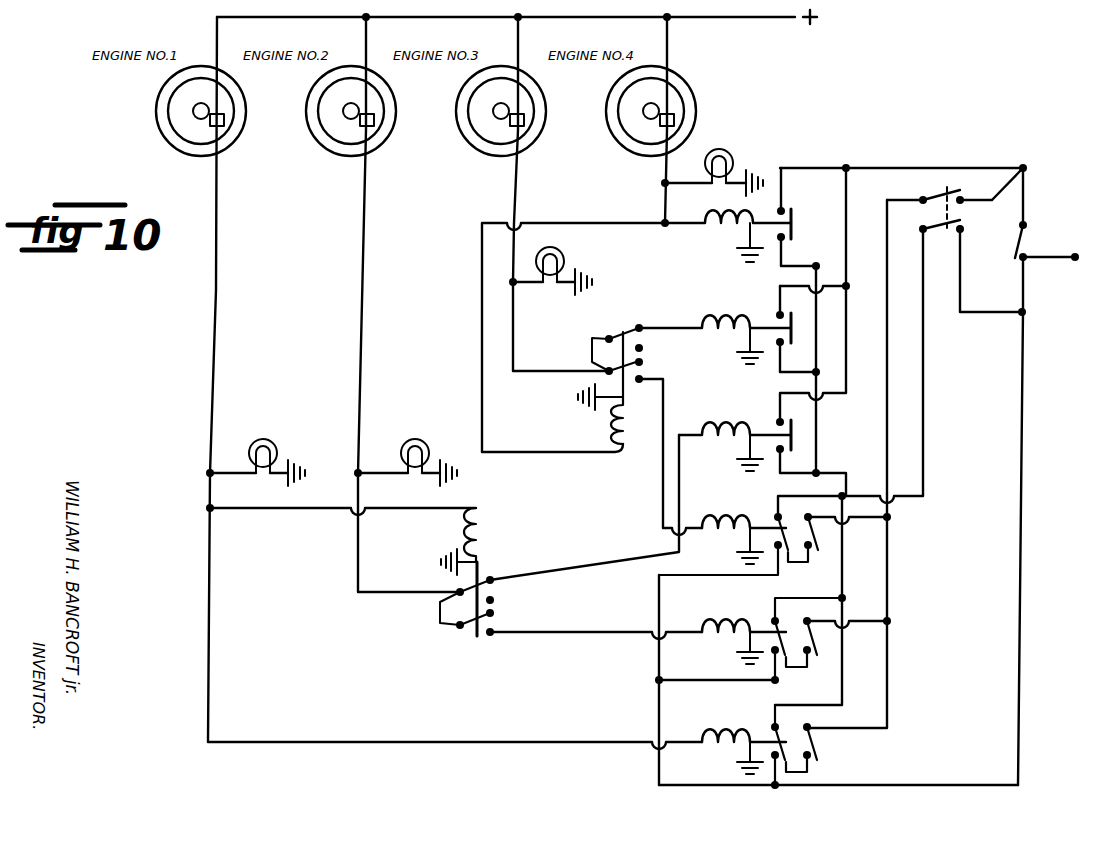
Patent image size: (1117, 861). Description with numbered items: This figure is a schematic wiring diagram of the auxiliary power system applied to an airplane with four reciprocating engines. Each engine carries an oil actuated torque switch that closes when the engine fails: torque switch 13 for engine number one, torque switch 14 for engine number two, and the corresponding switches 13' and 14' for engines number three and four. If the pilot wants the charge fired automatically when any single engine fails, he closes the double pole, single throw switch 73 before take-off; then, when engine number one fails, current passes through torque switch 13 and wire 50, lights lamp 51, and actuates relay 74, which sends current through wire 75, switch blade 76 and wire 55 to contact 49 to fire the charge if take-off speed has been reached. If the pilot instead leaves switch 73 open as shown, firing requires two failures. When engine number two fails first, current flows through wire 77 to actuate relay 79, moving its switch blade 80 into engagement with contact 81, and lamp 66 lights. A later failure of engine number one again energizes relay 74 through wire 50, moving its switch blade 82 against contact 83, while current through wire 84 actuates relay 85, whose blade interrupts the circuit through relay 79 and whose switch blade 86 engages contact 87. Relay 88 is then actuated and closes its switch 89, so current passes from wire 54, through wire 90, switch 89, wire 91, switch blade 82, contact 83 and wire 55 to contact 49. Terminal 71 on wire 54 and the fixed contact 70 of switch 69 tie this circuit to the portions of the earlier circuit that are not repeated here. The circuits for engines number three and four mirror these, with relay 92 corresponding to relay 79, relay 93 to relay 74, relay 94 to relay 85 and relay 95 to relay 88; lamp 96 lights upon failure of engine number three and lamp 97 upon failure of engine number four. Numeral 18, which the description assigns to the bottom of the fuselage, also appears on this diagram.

The torque switch 13 is at (203, 118).
The torque switch 14 is at (353, 118).
The engine no. 3 indicator 13' is at (504, 115).
The engine no. 4 indicator 14' is at (653, 115).
The bottom of the airplane fuselage 18 is at (486, 636).
The relay contact 49 is at (1075, 254).
The wire 50 is at (210, 395).
The lamp 51 is at (270, 440).
The wire 54 is at (932, 170).
The wire 55 is at (900, 785).
The lamp 66 is at (422, 440).
The switch 69 is at (1017, 246).
The fixed contact 70 is at (1025, 262).
The terminal 71 is at (1024, 168).
The double pole, single throw switch 73 is at (923, 222).
The relay 74 is at (726, 736).
The wire 75 is at (888, 580).
The switch blade 76 is at (812, 740).
The wire 77 is at (360, 375).
The relay 79 is at (722, 626).
The switch blade 80 is at (778, 622).
The contact 81 is at (775, 656).
The switch blade 82 is at (788, 736).
The contact 83 is at (766, 745).
The wire 84 is at (314, 512).
The relay 85 is at (484, 530).
The switch blade 86 is at (467, 599).
The contact 87 is at (492, 578).
The relay 88 is at (722, 425).
The switch 89 is at (792, 440).
The wire 90 is at (846, 355).
The wire 91 is at (843, 585).
The relay 92 is at (724, 320).
The relay 93 is at (718, 218).
The relay 94 is at (626, 440).
The relay 95 is at (724, 522).
The lamp 96 is at (558, 254).
The lamp 97 is at (727, 150).